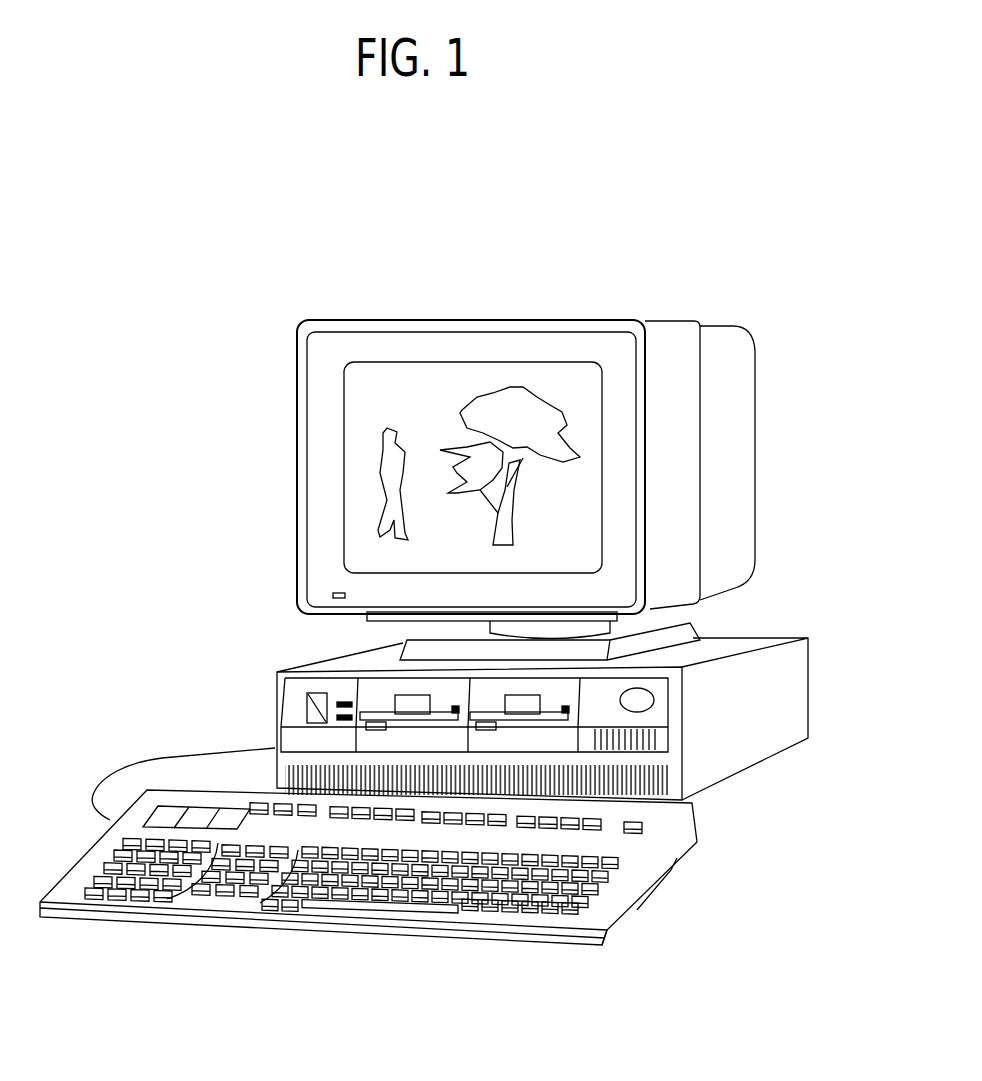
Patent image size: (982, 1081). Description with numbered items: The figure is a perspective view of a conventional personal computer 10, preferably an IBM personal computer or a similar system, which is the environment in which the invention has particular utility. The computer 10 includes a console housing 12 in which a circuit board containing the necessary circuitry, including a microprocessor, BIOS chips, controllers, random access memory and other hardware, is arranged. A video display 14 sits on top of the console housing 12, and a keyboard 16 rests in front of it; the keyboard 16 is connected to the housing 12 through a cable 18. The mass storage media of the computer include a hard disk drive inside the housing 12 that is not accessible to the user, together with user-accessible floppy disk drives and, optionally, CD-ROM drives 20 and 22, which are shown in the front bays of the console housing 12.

The computer 10 is at (196, 506).
The console housing 12 is at (725, 732).
The video display 14 is at (752, 387).
The keyboard 16 is at (522, 942).
The cable 18 is at (162, 758).
The drive 20 is at (557, 700).
The drive 22 is at (417, 700).